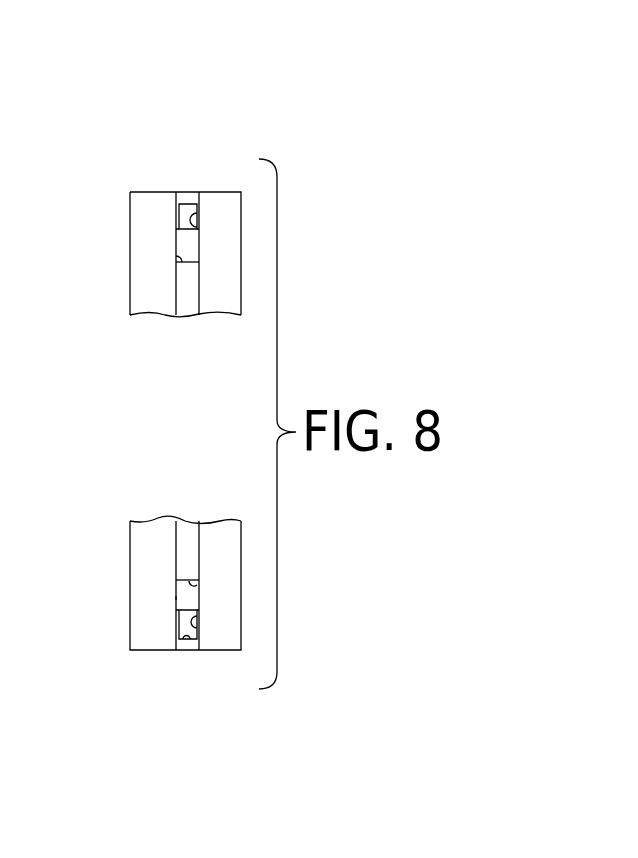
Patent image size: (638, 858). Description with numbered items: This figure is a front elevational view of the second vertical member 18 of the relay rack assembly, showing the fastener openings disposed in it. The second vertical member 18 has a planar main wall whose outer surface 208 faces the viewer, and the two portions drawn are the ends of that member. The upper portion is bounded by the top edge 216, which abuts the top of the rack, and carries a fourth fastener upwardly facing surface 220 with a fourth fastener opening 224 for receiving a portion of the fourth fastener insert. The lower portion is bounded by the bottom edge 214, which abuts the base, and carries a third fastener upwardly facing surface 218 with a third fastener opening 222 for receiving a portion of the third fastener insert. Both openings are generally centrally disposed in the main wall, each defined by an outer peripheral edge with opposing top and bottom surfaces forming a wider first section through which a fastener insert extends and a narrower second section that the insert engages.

The second vertical member 18 is at (243, 85).
The top edge 216 is at (146, 192).
The fourth fastener opening 224 is at (168, 235).
The fourth fastener upwardly facing surface 220 is at (190, 272).
The outer surface 208 is at (187, 537).
The third fastener upwardly facing surface 218 is at (184, 578).
The third fastener opening 222 is at (168, 618).
The bottom edge 214 is at (138, 651).